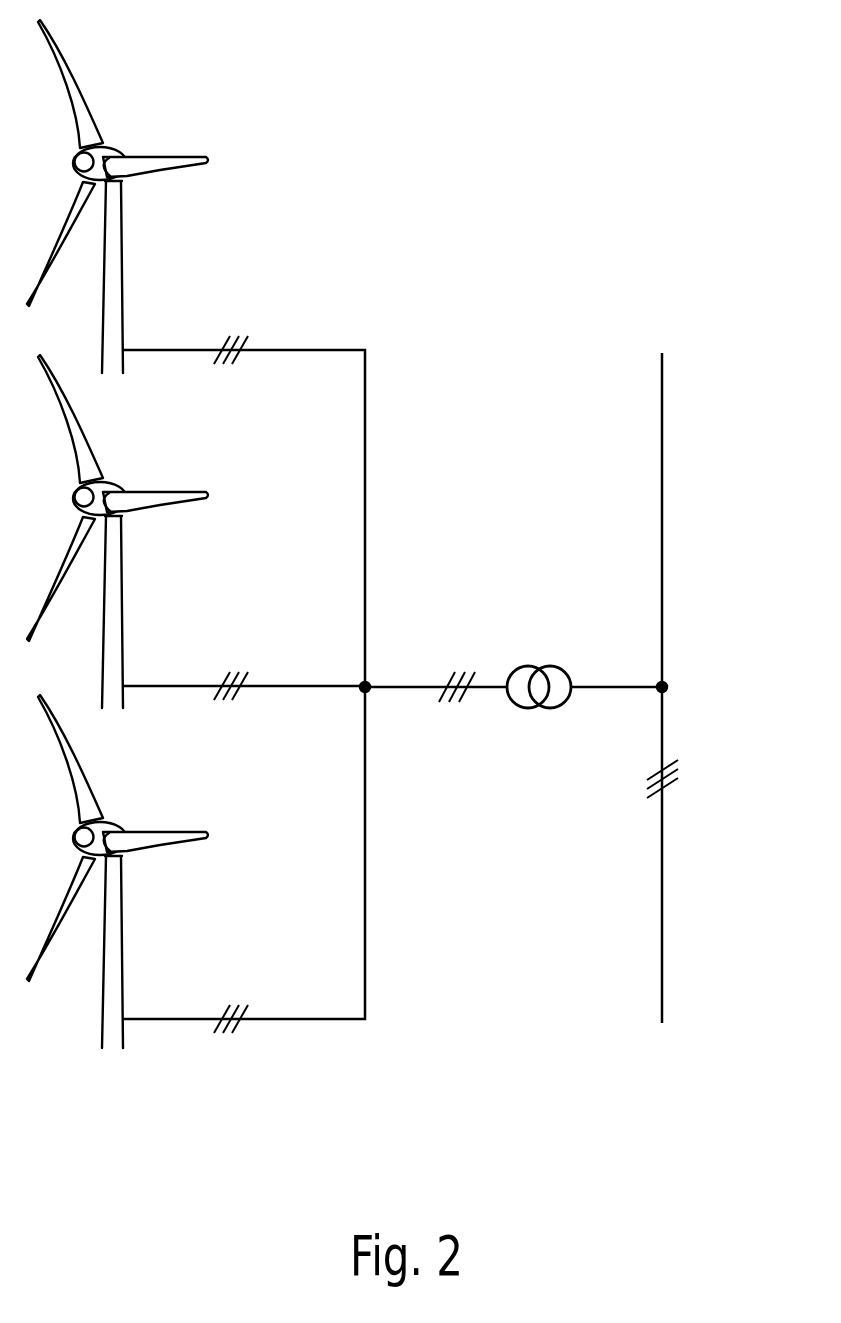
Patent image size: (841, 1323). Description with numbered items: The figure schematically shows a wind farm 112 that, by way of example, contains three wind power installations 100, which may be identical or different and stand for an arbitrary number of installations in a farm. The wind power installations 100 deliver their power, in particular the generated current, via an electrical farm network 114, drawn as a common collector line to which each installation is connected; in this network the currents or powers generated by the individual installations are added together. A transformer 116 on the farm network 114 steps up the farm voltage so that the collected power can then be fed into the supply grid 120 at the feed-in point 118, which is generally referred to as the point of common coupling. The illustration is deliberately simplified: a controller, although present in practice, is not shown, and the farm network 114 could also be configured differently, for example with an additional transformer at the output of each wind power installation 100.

The wind power installation 100 is at (123, 255).
The wind farm 112 is at (458, 225).
The electrical farm network 114 is at (398, 687).
The transformer 116 is at (540, 657).
The feed-in point 118 is at (672, 675).
The supply grid 120 is at (662, 403).